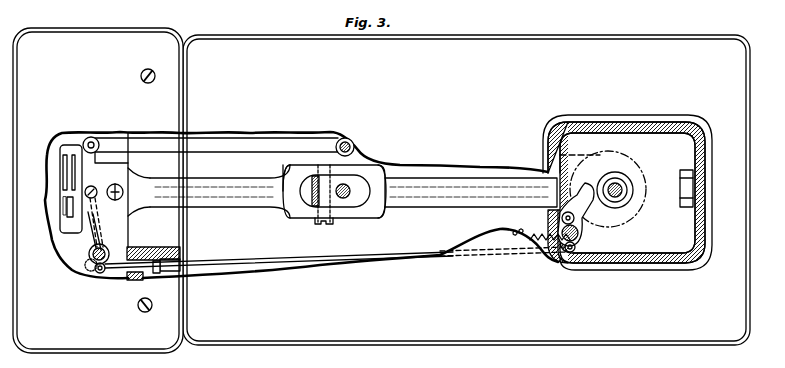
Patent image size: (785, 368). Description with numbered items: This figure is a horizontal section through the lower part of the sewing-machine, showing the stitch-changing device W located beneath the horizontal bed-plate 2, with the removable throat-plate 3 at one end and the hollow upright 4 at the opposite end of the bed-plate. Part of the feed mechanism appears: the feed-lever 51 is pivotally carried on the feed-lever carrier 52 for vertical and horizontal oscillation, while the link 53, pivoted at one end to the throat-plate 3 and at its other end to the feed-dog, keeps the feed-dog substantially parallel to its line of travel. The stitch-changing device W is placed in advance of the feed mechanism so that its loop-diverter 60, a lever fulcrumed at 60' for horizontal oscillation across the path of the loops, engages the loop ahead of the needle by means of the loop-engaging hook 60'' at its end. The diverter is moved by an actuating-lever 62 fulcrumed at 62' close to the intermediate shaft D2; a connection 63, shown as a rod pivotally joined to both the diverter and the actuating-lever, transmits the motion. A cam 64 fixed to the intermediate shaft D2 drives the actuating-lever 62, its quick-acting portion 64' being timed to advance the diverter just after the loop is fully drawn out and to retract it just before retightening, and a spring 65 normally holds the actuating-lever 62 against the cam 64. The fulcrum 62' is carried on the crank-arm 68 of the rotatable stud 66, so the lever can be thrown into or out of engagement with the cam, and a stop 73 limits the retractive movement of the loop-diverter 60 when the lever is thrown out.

The bed-plate 2 is at (466, 190).
The throat-plate 3 is at (98, 190).
The hollow upright 4 is at (673, 123).
The feed-lever 51 is at (233, 186).
The feed-lever carrier 52 is at (345, 199).
The link 53 is at (234, 138).
The loop-diverter 60 is at (77, 197).
The fulcrum of loop-diverter 60' is at (80, 279).
The loop-engaging hook 60'' is at (43, 213).
The actuating-lever 62 is at (576, 208).
The fulcrum of actuating-lever 62' is at (587, 218).
The connection rod 63 is at (268, 262).
The cam 64 is at (608, 183).
The quick-acting portion of cam 64' is at (580, 175).
The spring 65 is at (545, 237).
The stud 66 is at (576, 247).
The crank-arm 68 is at (580, 233).
The stop 73 is at (156, 274).
The intermediate shaft D2 is at (636, 186).
The stitch-changing device W is at (89, 254).